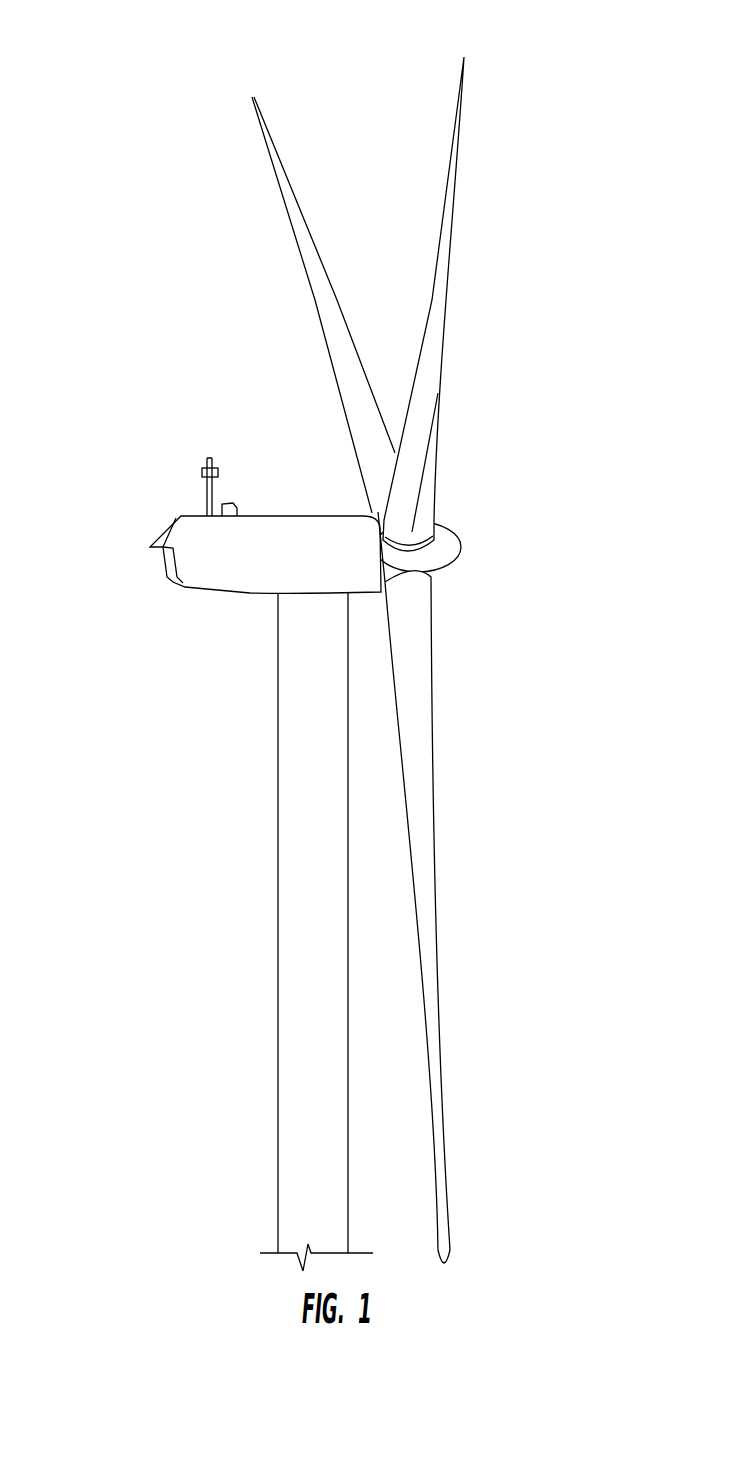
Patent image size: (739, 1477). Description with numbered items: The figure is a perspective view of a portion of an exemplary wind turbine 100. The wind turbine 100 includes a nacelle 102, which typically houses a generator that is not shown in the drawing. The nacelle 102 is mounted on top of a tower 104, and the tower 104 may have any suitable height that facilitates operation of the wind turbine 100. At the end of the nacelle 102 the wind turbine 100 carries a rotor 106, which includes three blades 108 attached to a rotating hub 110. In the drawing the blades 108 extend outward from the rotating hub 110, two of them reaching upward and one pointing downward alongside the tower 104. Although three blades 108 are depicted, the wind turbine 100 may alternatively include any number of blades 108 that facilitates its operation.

The wind turbine 100 is at (162, 178).
The nacelle 102 is at (203, 598).
The tower 104 is at (278, 873).
The rotor 106 is at (581, 280).
The blades 108 is at (292, 187).
The rotating hub 110 is at (458, 560).